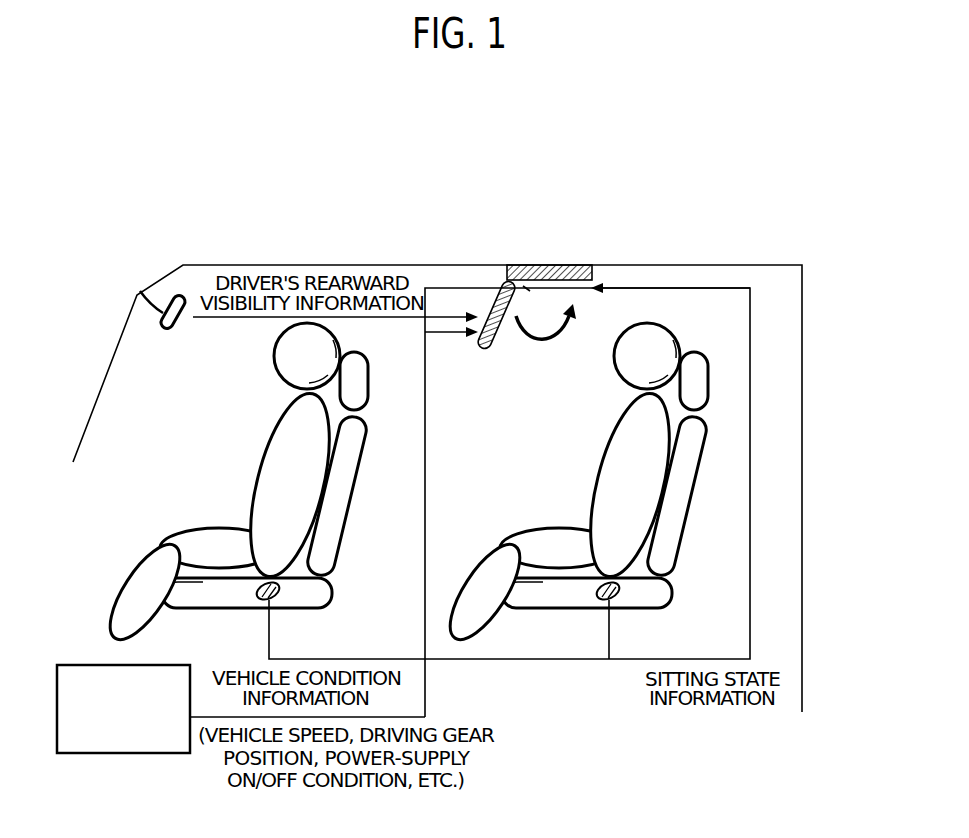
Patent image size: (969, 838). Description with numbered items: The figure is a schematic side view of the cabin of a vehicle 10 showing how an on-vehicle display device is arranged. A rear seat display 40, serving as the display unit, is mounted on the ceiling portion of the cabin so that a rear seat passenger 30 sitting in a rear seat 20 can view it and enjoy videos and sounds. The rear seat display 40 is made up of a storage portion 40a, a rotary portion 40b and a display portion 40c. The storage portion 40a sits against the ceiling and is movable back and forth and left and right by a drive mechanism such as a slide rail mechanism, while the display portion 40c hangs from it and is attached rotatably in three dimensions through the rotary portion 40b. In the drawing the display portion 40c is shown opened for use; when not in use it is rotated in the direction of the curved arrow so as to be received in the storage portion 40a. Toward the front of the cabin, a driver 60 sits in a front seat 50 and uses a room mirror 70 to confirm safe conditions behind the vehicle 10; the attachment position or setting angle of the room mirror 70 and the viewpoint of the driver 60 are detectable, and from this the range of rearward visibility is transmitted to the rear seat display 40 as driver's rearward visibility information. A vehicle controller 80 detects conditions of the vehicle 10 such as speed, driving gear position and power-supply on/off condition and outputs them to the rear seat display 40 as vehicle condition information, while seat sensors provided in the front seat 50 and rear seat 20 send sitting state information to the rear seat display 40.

The vehicle 10 is at (803, 445).
The rear seat 20 is at (562, 610).
The rear seat passenger 30 is at (605, 455).
The rear seat display 40 is at (534, 291).
The storage portion 40a is at (597, 265).
The rotary portion 40b is at (506, 283).
The display portion 40c is at (499, 335).
The front seat 50 is at (214, 610).
The driver 60 is at (283, 376).
The room mirror 70 is at (138, 292).
The vehicle controller 80 is at (82, 665).